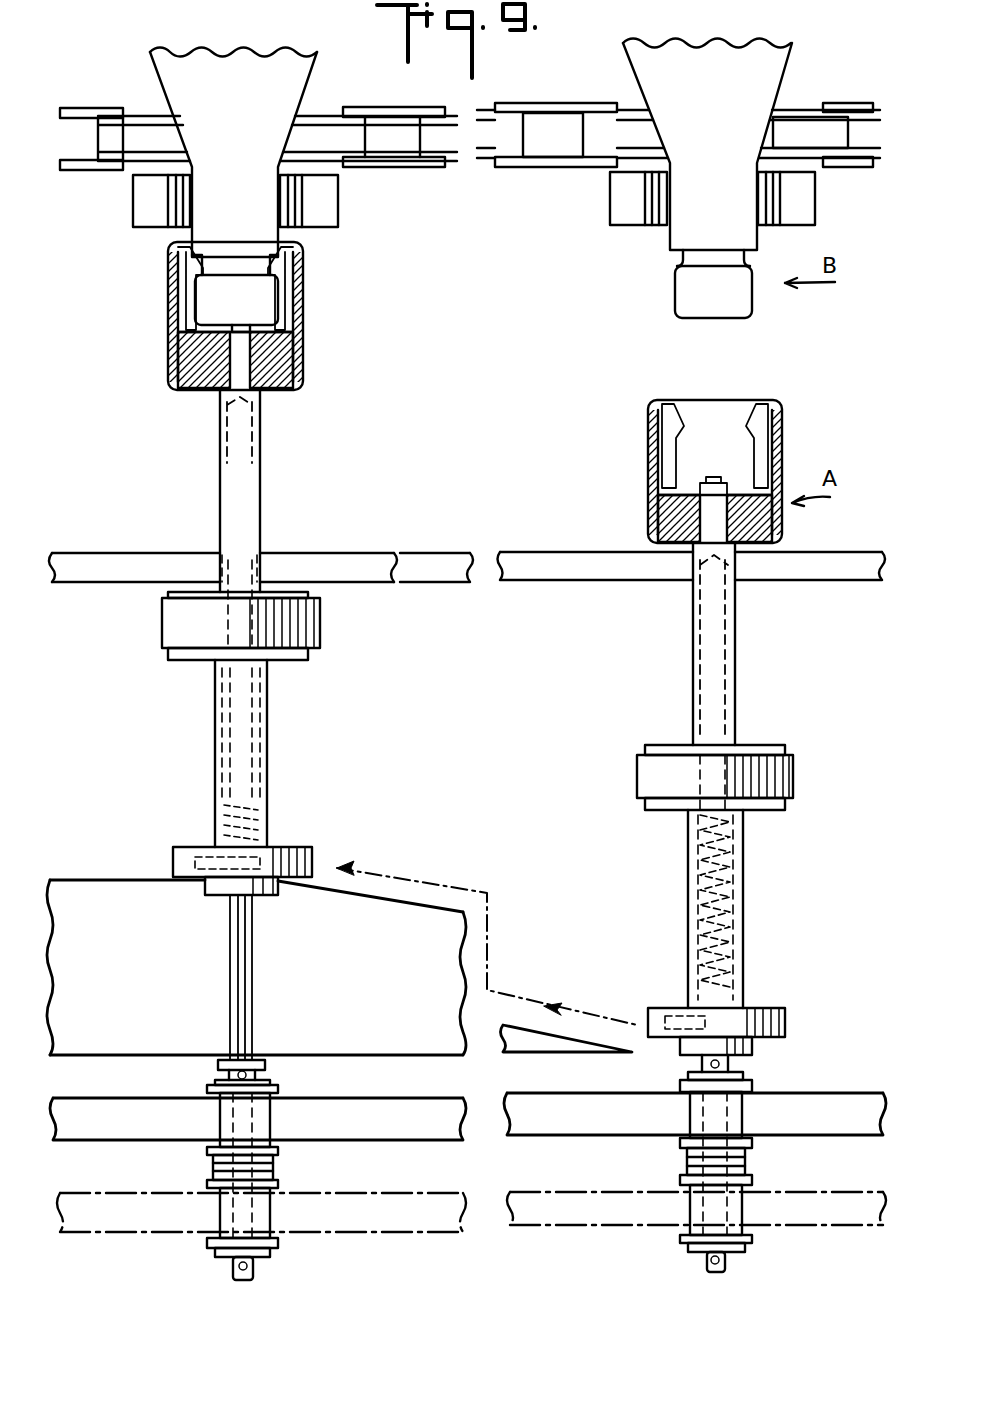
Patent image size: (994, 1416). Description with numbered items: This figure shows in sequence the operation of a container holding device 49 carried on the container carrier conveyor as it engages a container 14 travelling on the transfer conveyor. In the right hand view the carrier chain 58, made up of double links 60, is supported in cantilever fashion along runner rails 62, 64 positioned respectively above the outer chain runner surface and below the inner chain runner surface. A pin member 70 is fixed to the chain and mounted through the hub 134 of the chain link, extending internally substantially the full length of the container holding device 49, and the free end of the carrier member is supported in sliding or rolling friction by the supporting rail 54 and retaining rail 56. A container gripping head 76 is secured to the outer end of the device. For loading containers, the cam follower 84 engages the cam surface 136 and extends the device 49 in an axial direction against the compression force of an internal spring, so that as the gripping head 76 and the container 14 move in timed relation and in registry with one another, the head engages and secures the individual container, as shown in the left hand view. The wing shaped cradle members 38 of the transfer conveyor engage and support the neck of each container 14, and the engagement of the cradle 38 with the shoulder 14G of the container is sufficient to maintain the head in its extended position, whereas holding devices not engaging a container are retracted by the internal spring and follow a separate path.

The container 14 is at (675, 238).
The shoulder of the container 14G is at (282, 118).
The wing shaped cradle members 38 is at (335, 207).
The container holding device 49 is at (314, 486).
The supporting rail 54 is at (430, 567).
The retaining rail 56 is at (337, 563).
The carrier chain 58 is at (747, 1178).
The double links 60 is at (223, 1213).
The runner rail 62 is at (363, 1225).
The runner rail 64 is at (398, 1142).
The pin member 70 is at (240, 1277).
The container gripping head 76 is at (303, 340).
The cam follower 84 is at (313, 853).
The hub of the chain link 134 is at (267, 1250).
The cam surface 136 is at (417, 908).